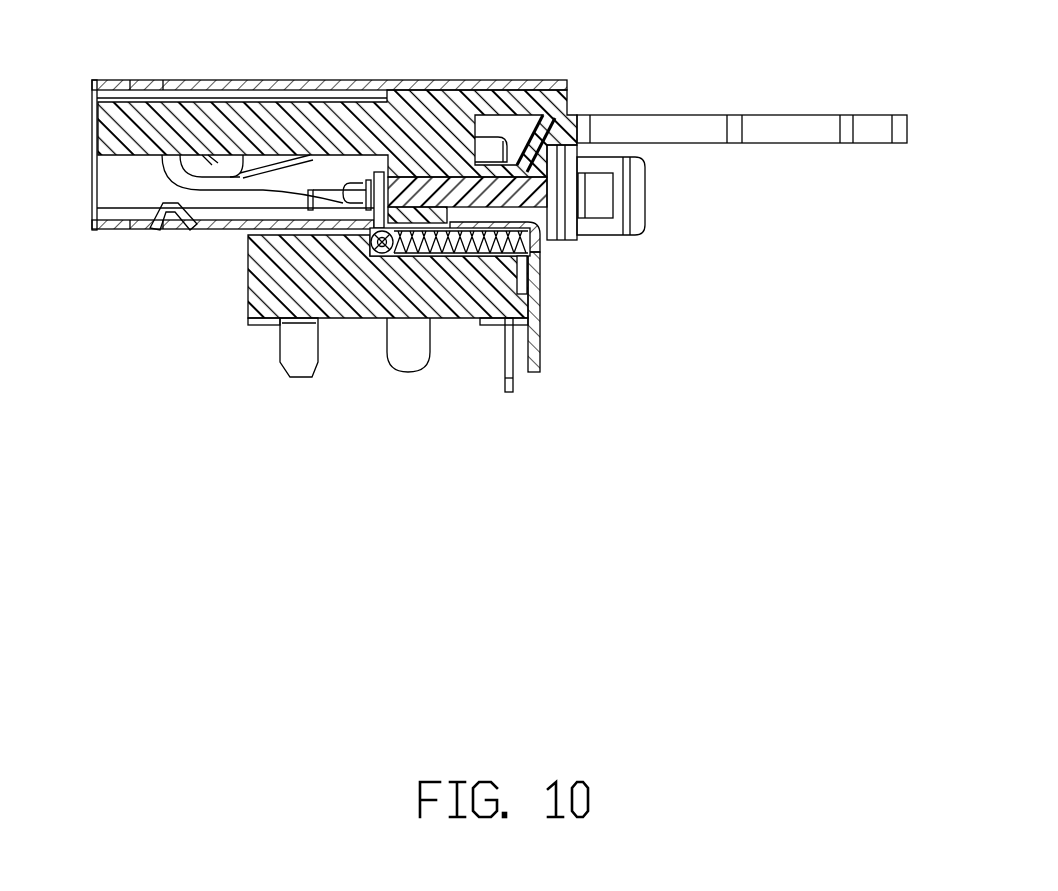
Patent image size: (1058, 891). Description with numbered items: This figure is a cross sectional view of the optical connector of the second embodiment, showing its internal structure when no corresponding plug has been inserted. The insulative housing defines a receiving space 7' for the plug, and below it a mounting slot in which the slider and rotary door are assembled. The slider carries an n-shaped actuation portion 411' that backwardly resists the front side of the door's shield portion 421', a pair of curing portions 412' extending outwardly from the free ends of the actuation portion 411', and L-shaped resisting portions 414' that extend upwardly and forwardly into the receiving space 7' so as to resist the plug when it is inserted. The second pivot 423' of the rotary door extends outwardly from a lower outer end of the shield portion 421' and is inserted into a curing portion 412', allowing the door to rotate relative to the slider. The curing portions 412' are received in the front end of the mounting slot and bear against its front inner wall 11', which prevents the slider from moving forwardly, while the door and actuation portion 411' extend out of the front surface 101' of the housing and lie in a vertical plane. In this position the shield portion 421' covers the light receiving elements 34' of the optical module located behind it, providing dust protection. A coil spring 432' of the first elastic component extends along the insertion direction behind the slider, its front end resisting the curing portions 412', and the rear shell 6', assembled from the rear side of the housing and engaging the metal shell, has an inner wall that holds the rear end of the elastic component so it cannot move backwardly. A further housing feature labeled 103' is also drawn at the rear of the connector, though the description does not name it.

The receiving space 7' is at (304, 155).
The front inner wall 11' is at (330, 313).
The light receiving elements 34' is at (513, 90).
The front surface 101' is at (337, 115).
The mounting fitting 103' is at (592, 217).
The rear shell 6' is at (678, 252).
The actuation portion 411' is at (305, 106).
The curing portions 412' is at (351, 342).
The resisting portion 414' is at (246, 115).
The shield portion 421' is at (353, 115).
The second pivot 423' is at (455, 340).
The coil spring 432' is at (450, 340).